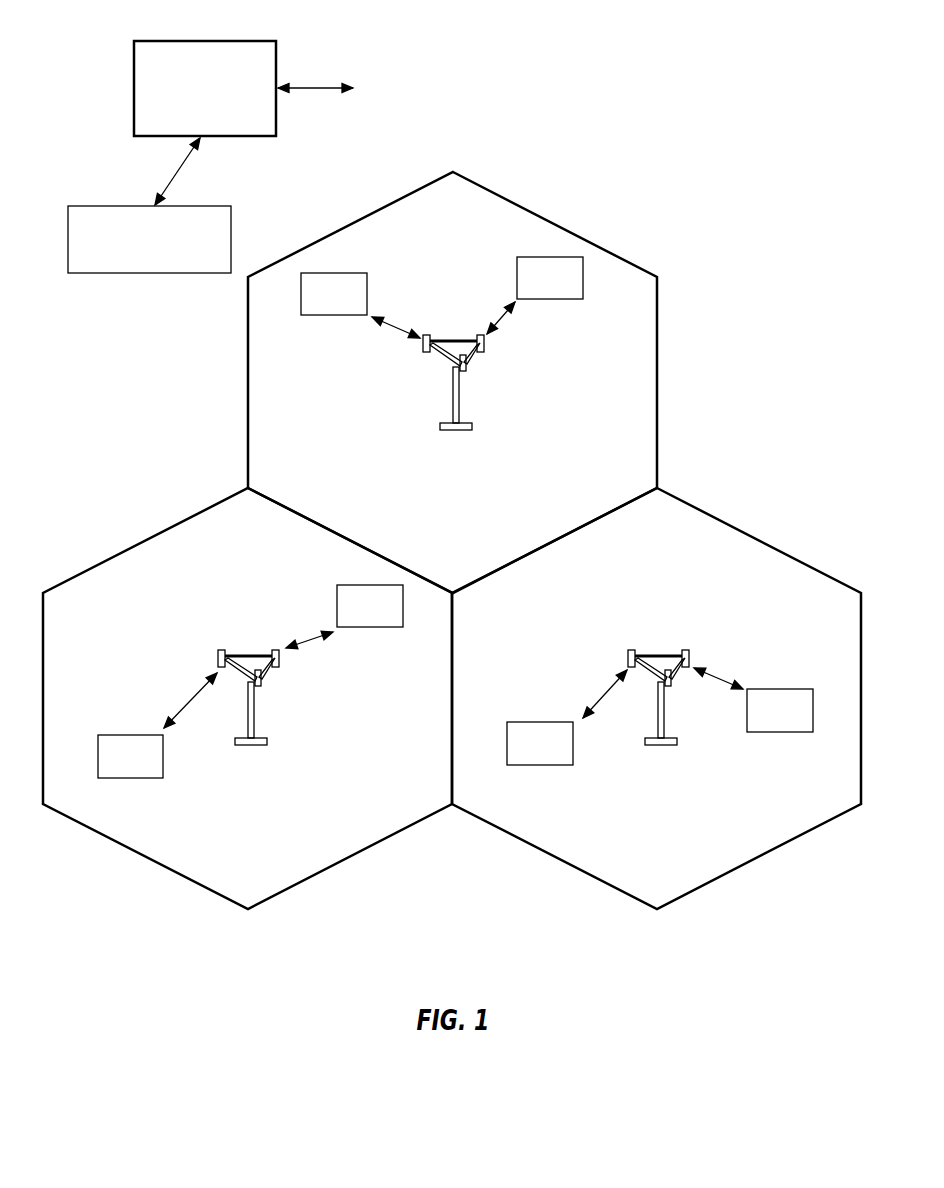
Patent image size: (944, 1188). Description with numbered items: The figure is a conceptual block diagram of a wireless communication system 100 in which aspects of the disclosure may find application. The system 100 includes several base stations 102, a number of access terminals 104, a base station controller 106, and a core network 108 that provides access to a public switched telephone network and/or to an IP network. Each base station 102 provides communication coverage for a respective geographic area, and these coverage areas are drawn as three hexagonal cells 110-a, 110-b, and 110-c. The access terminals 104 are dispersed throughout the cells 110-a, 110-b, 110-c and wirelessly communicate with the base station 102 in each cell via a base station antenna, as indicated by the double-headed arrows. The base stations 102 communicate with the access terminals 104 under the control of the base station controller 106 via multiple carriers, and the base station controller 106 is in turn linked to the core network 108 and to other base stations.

The wireless communication system 100 is at (773, 203).
The base station 102 is at (455, 343).
The access terminal 104 is at (324, 316).
The base station controller 106 is at (164, 40).
The core network 108 is at (113, 205).
The cell 110-a is at (122, 551).
The cell 110-b is at (540, 215).
The cell 110-c is at (760, 540).